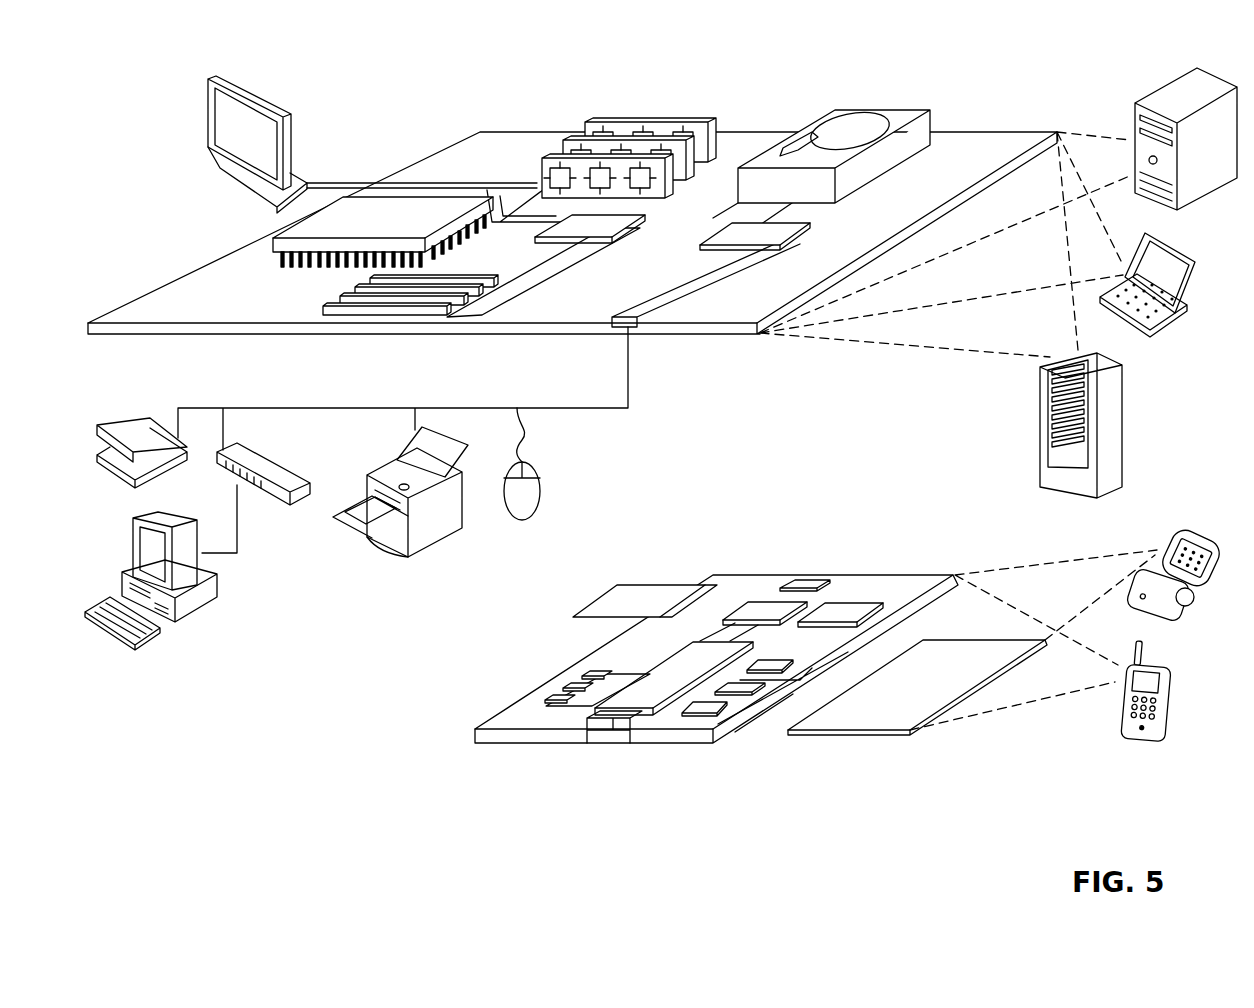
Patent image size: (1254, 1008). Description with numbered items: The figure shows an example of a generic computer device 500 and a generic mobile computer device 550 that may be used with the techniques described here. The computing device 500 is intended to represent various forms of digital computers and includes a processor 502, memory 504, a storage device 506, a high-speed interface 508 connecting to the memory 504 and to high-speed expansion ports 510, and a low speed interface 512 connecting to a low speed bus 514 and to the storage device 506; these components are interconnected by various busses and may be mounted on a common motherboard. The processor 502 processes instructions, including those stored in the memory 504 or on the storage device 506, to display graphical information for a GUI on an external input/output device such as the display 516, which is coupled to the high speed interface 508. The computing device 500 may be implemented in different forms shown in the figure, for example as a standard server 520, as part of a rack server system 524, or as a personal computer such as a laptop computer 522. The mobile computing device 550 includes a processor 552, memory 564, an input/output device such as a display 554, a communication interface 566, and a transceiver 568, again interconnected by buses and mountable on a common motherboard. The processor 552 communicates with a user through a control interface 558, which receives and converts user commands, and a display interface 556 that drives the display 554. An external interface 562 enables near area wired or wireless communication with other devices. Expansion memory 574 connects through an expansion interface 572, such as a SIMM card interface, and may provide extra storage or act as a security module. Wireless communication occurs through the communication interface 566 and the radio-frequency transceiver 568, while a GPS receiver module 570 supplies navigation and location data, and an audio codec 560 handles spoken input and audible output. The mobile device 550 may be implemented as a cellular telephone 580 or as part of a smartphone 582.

The computing device 500 is at (396, 100).
The processor 502 is at (278, 242).
The memory 504 is at (595, 125).
The storage device 506 is at (818, 113).
The high-speed interface 508 is at (563, 222).
The high-speed expansion ports 510 is at (347, 300).
The low speed interface 512 is at (735, 230).
The low speed bus 514 is at (633, 325).
The display 516 is at (215, 76).
The standard server 520 is at (1133, 118).
The laptop computer 522 is at (1205, 258).
The rack server system 524 is at (1047, 447).
The mobile computer device 550 is at (448, 742).
The processor 552 is at (648, 698).
The display 554 is at (878, 717).
The display interface 556 is at (718, 707).
The control interface 558 is at (758, 690).
The audio codec 560 is at (772, 670).
The external interface 562 is at (613, 730).
The memory 564 is at (565, 692).
The communication interface 566 is at (765, 610).
The transceiver 568 is at (840, 612).
The GPS receiver module 570 is at (813, 578).
The expansion interface 572 is at (687, 588).
The expansion memory 574 is at (620, 590).
The cellular telephone 580 is at (1182, 548).
The smartphone 582 is at (1117, 698).